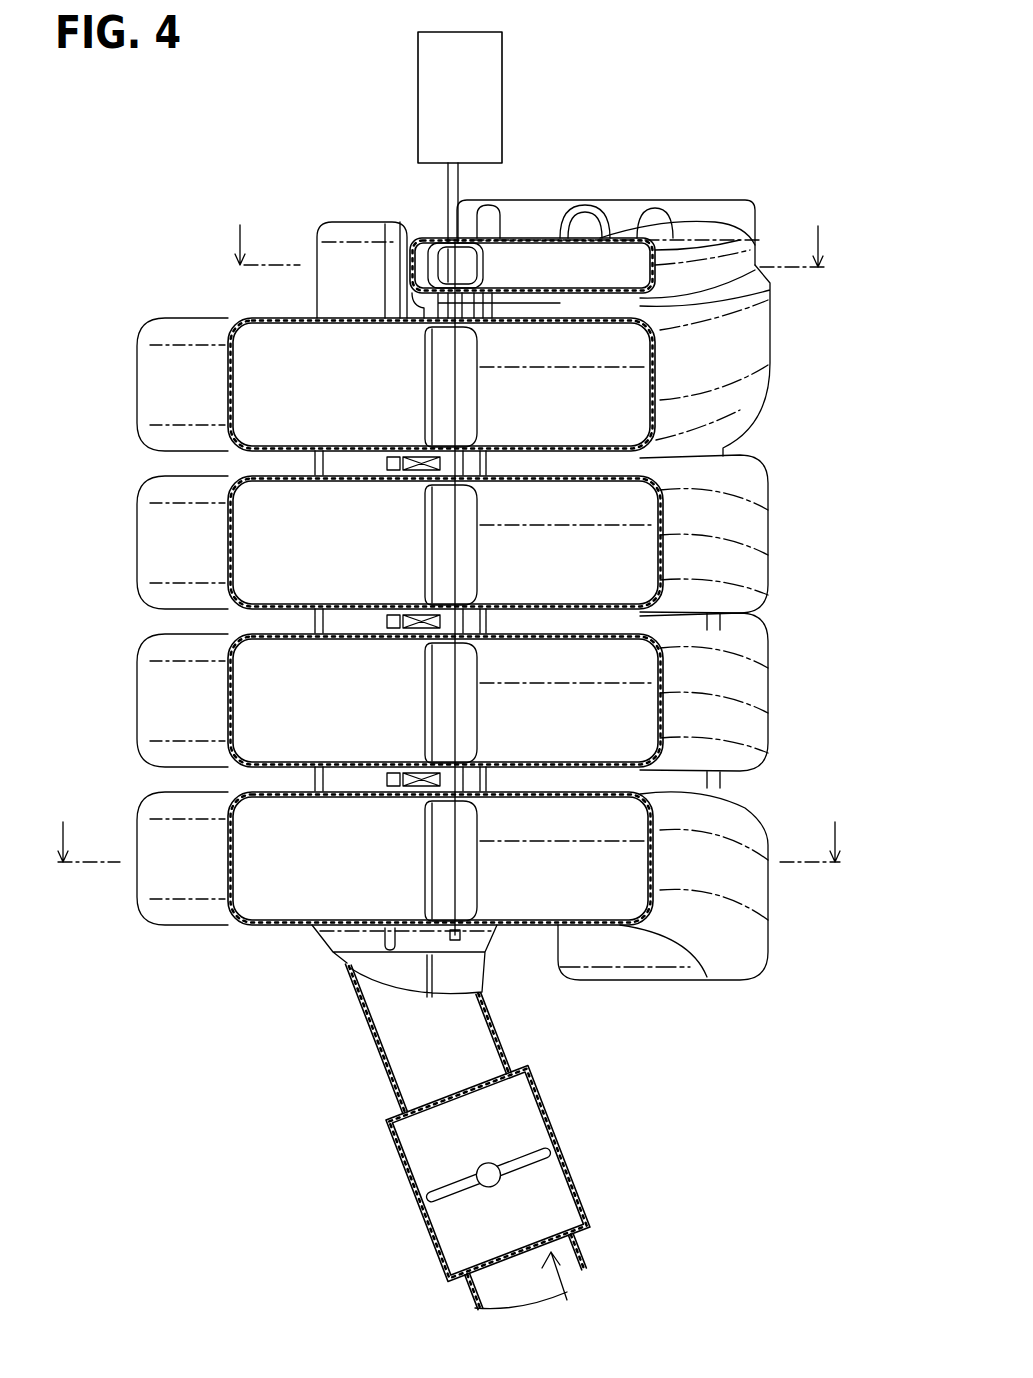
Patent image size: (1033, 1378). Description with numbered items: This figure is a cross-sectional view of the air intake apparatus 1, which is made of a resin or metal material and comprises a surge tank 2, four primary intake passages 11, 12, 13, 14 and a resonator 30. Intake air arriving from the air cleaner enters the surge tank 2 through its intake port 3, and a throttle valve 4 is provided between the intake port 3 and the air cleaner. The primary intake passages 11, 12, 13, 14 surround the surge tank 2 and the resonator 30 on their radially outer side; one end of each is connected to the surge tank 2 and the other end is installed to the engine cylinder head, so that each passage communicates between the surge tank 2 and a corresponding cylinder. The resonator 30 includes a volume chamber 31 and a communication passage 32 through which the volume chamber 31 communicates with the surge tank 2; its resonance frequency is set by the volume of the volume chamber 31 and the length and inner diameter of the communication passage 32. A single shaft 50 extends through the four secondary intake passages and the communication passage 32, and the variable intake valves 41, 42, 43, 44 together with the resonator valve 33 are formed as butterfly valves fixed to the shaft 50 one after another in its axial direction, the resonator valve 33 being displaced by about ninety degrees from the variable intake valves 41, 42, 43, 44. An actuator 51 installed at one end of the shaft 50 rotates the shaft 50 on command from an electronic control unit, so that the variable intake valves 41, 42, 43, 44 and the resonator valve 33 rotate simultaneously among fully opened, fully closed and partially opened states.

The air intake apparatus 1 is at (197, 137).
The surge tank 2 is at (345, 255).
The intake port 3 is at (373, 1039).
The throttle valve 4 is at (462, 1203).
The primary intake passage 11 is at (268, 388).
The primary intake passage 12 is at (268, 545).
The primary intake passage 13 is at (268, 695).
The primary intake passage 14 is at (268, 866).
The resonator 30 is at (585, 201).
The volume chamber 31 is at (595, 215).
The communication passage 32 is at (627, 268).
The resonator valve 33 is at (467, 267).
The variable intake valve 41 is at (700, 360).
The variable intake valve 42 is at (700, 542).
The variable intake valve 43 is at (700, 714).
The variable intake valve 44 is at (700, 861).
The shaft 50 is at (448, 180).
The actuator 51 is at (487, 80).